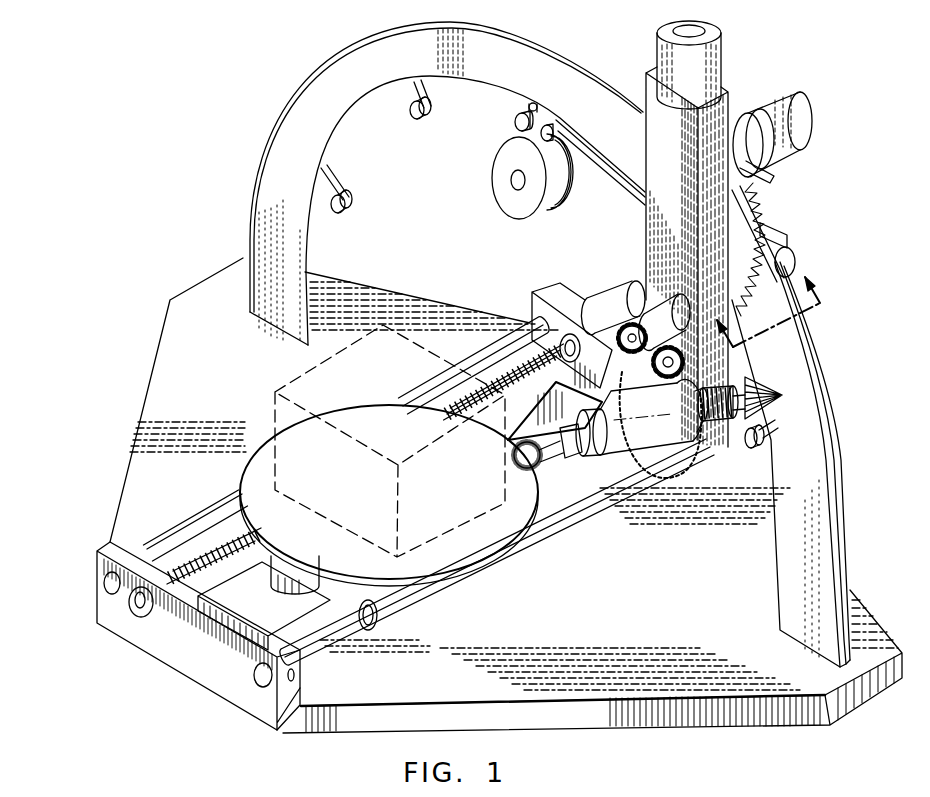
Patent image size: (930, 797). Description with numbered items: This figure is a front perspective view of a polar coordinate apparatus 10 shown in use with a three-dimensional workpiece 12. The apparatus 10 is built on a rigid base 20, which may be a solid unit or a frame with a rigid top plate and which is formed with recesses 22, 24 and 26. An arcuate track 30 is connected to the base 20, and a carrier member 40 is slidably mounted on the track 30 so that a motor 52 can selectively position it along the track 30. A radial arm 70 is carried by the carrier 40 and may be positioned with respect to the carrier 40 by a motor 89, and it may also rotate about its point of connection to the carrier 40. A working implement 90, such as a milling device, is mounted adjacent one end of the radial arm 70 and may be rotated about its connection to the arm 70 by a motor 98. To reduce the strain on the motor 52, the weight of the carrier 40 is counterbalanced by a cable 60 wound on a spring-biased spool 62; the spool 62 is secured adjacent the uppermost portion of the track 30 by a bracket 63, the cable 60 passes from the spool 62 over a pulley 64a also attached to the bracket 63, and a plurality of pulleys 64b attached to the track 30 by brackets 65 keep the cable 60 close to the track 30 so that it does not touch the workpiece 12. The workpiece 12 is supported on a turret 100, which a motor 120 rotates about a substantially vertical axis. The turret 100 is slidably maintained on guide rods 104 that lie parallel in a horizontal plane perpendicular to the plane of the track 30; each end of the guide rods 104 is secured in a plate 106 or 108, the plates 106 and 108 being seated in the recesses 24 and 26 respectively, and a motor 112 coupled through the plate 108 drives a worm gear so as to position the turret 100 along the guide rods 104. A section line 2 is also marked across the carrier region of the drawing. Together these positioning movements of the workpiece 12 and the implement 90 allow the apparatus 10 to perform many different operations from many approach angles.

The polar coordinate apparatus 10 is at (212, 122).
The three-dimensional workpiece 12 is at (290, 378).
The base member 20 is at (622, 611).
The recess 22 is at (278, 618).
The recess 24 is at (303, 698).
The recess 26 is at (586, 406).
The arcuate track 30 is at (812, 528).
The carrier member 40 is at (795, 224).
The motor 52 is at (800, 115).
The cable 60 is at (620, 192).
The spring-biased spool 62 is at (505, 170).
The bracket 63 is at (529, 108).
The pulley 64a is at (515, 123).
The pulleys 64b is at (413, 118).
The brackets 65 is at (410, 92).
The radial arm 70 is at (640, 86).
The motor 89 is at (700, 30).
The working implement 90 is at (636, 443).
The motor 98 is at (650, 300).
The turret 100 is at (466, 582).
The guide rods 104 is at (200, 531).
The plate 106 is at (96, 552).
The plate 108 is at (538, 293).
The motor 112 is at (606, 286).
The motor 120 is at (295, 578).
The section line 2- 2 is at (775, 326).